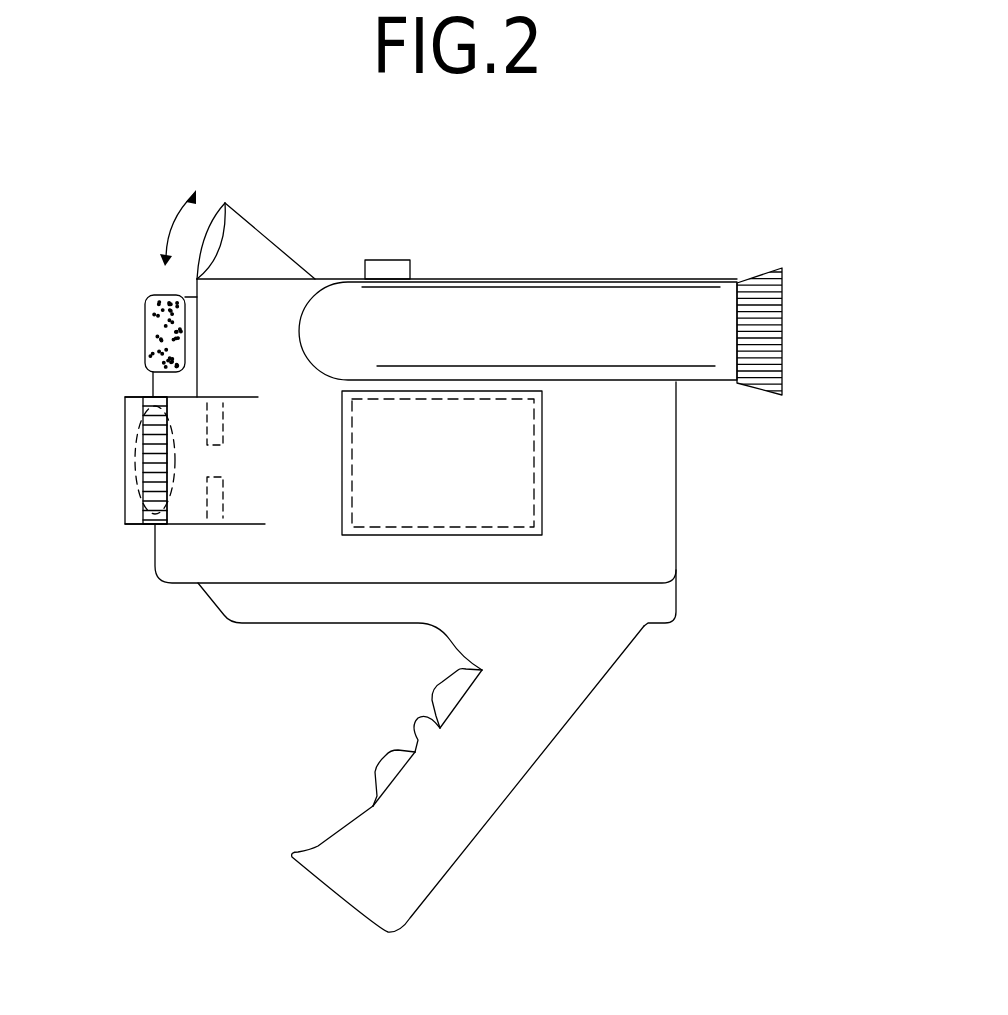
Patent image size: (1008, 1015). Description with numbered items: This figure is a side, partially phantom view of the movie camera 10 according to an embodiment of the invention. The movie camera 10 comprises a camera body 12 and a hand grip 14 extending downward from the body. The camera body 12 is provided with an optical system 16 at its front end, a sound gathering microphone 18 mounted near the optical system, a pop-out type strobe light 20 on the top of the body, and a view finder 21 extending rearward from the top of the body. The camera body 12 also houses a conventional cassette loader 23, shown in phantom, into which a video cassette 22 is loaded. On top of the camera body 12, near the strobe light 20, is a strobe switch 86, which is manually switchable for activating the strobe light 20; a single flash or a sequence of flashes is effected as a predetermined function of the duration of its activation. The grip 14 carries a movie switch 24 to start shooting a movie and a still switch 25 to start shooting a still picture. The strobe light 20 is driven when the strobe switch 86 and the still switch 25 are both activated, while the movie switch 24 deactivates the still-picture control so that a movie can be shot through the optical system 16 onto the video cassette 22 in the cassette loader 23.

The movie camera 10 is at (672, 218).
The camera body 12 is at (662, 511).
The hand grip 14 is at (605, 656).
The optical system 16 is at (118, 530).
The sound gathering microphone 18 is at (157, 292).
The pop-out type strobe light 20 is at (267, 260).
The view finder 21 is at (767, 357).
The video cassette 22 is at (512, 433).
The cassette loader 23 is at (507, 497).
The movie switch 24 is at (443, 694).
The still switch 25 is at (383, 770).
The strobe switch 86 is at (396, 271).